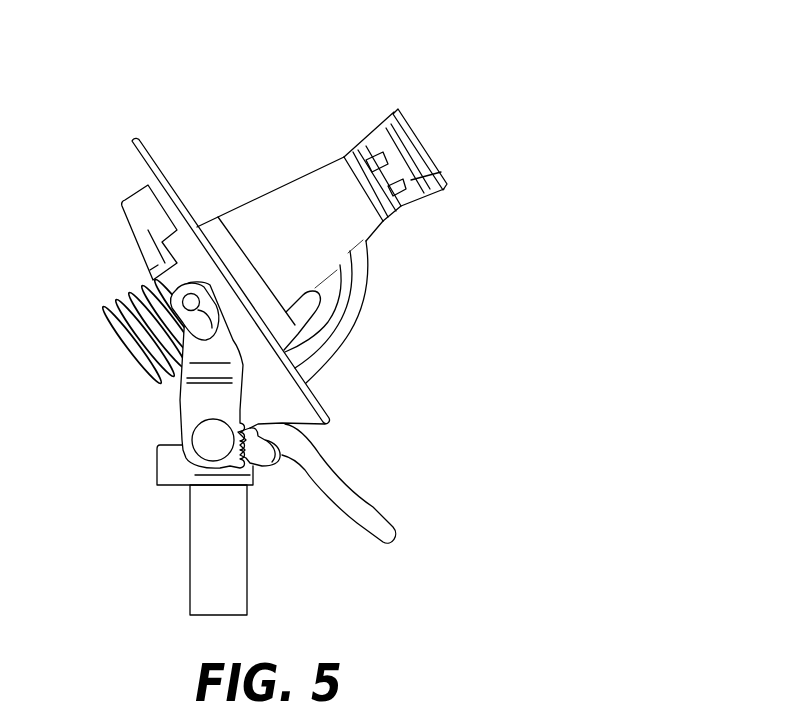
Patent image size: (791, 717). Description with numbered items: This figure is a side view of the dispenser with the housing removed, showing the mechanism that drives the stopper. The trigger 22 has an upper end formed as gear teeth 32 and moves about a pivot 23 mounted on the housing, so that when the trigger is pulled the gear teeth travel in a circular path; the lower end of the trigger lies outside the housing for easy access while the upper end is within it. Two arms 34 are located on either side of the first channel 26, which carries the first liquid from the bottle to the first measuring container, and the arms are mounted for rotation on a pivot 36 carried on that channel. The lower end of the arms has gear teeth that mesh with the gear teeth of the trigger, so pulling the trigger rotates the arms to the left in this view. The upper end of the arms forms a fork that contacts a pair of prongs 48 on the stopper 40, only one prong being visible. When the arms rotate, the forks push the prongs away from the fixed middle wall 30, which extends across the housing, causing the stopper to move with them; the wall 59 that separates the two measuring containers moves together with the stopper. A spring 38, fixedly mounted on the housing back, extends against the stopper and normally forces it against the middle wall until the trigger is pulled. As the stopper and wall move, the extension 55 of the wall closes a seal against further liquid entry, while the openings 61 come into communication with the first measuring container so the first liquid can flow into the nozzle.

The trigger 22 is at (373, 507).
The pivot 23 is at (283, 463).
The first channel 26 is at (188, 587).
The middle wall 30 is at (135, 137).
The gear teeth 32 is at (258, 466).
The arms 34 is at (182, 390).
The pivot 36 is at (159, 464).
The spring 38 is at (130, 337).
The stopper 40 is at (121, 203).
The prongs 48 is at (173, 293).
The extension 55 is at (353, 337).
The wall 59 is at (290, 181).
The openings 61 is at (401, 196).